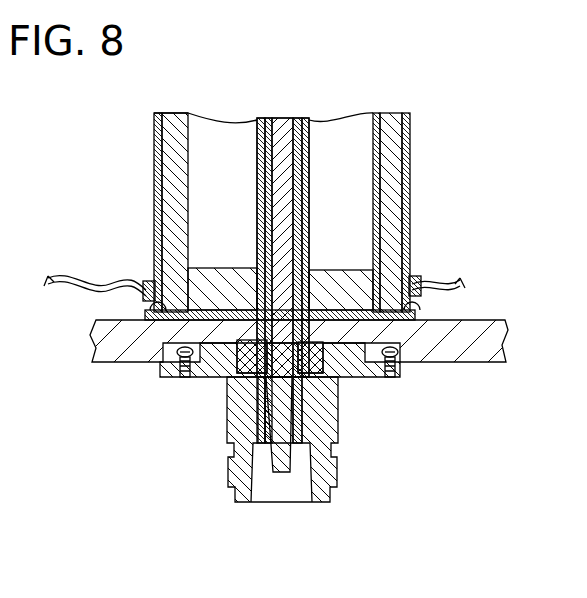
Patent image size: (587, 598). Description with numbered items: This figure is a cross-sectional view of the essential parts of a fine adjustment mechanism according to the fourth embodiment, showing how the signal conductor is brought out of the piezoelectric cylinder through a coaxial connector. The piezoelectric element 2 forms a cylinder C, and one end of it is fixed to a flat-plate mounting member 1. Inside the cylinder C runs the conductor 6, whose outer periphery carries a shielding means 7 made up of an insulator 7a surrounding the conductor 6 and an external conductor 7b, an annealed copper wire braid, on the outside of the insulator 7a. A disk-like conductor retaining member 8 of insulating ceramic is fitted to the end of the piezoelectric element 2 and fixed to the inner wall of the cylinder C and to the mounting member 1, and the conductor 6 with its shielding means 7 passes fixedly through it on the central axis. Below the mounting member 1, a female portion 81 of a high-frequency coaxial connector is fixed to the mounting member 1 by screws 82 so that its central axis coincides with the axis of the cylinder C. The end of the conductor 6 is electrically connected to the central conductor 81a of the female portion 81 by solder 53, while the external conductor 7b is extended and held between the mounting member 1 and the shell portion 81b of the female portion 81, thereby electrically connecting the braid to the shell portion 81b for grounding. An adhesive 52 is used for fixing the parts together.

The mounting member 1 is at (482, 322).
The piezoelectric element 2 is at (178, 164).
The conductor 6 is at (283, 158).
The shielding means 7 is at (311, 188).
The insulator 7a is at (300, 207).
The external conductor 7b is at (318, 230).
The conductor retaining member 8 is at (345, 278).
The adhesive 52 is at (400, 322).
The solder 53 is at (262, 262).
The female portion of high-frequency coaxial connector 81 is at (340, 442).
The central conductor 81a is at (283, 475).
The shell portion 81b is at (240, 405).
The screws 82 is at (178, 374).
The cylinder C is at (168, 113).